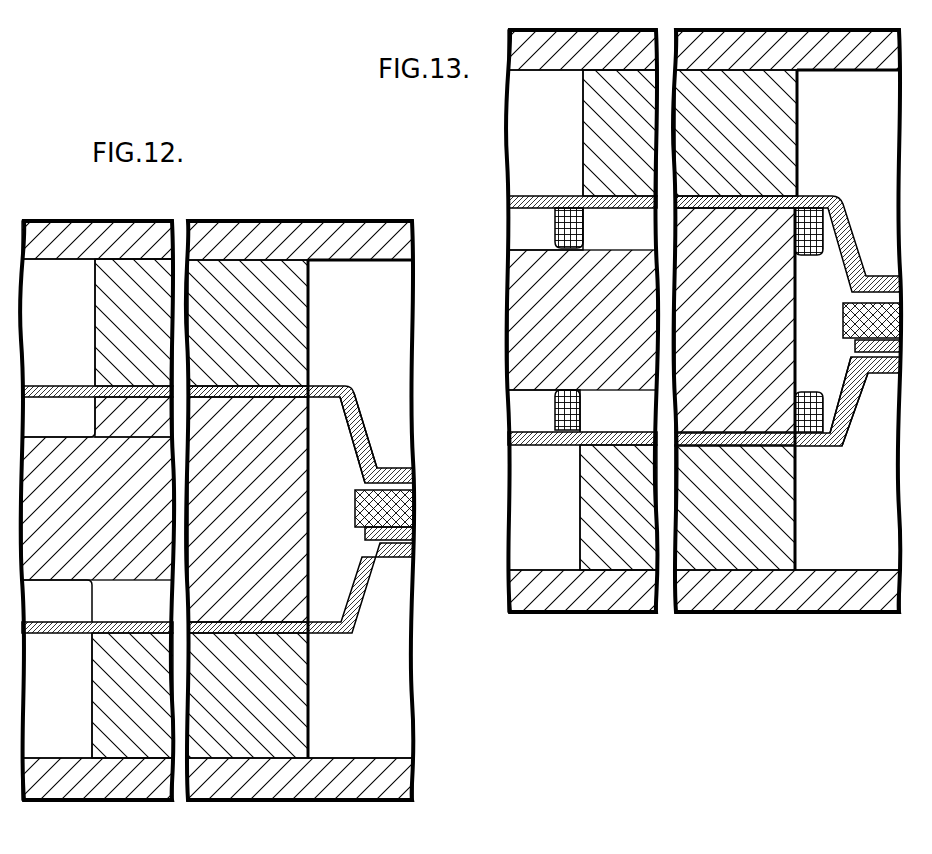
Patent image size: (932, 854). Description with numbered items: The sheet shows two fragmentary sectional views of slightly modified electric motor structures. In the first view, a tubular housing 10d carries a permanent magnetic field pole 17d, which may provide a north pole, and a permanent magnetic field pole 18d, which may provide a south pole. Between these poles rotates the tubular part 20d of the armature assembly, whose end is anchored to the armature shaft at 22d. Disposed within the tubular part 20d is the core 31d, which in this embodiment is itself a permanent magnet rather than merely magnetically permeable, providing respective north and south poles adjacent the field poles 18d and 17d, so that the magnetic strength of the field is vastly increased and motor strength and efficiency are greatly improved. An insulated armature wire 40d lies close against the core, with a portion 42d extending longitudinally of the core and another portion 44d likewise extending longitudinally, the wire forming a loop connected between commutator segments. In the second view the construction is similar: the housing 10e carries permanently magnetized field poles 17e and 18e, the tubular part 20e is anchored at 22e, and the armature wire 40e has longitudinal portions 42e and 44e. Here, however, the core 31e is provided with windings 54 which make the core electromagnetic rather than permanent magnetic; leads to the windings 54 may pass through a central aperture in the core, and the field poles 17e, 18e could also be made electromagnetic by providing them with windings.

In FIG. 12, the tubular housing 10d is at (357, 242).
In FIG. 12, the permanent magnetic field pole 17d is at (221, 272).
In FIG. 12, the permanent magnetic field pole 18d is at (277, 729).
In FIG. 12, the tubular part 20d is at (342, 387).
In FIG. 12, the anchoring location 22d is at (394, 500).
In FIG. 12, the core 31d is at (270, 553).
In FIG. 12, the armature wire 40d is at (350, 447).
In FIG. 12, the wire portion 42d is at (286, 630).
In FIG. 12, the wire portion 44d is at (280, 390).
In FIG. 13, the tubular housing 10e is at (622, 44).
In FIG. 13, the field pole 17e is at (732, 87).
In FIG. 13, the field pole 18e is at (748, 597).
In FIG. 13, the tubular part 20e is at (824, 197).
In FIG. 13, the anchoring location 22e is at (847, 318).
In FIG. 13, the core 31e is at (748, 331).
In FIG. 13, the armature wire 40e is at (842, 380).
In FIG. 13, the wire portion 42e is at (771, 448).
In FIG. 13, the wire portion 44e is at (764, 203).
In FIG. 13, the windings 54 is at (556, 230).